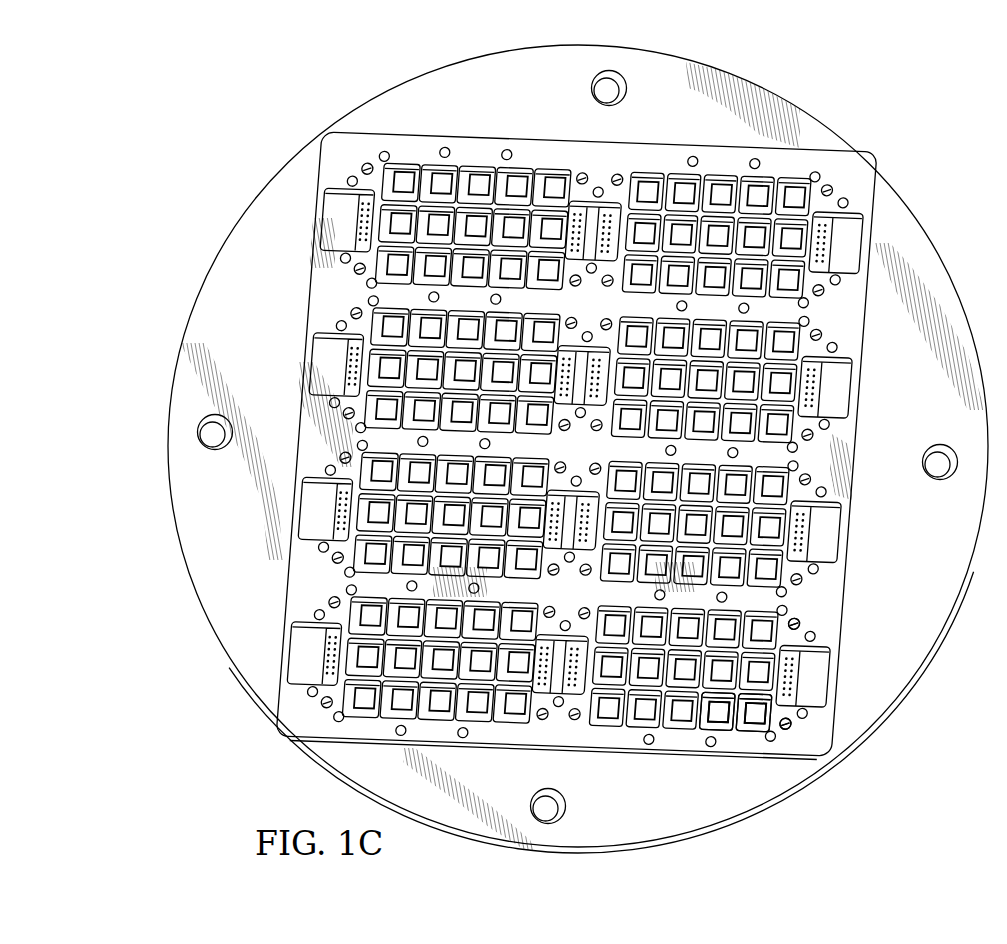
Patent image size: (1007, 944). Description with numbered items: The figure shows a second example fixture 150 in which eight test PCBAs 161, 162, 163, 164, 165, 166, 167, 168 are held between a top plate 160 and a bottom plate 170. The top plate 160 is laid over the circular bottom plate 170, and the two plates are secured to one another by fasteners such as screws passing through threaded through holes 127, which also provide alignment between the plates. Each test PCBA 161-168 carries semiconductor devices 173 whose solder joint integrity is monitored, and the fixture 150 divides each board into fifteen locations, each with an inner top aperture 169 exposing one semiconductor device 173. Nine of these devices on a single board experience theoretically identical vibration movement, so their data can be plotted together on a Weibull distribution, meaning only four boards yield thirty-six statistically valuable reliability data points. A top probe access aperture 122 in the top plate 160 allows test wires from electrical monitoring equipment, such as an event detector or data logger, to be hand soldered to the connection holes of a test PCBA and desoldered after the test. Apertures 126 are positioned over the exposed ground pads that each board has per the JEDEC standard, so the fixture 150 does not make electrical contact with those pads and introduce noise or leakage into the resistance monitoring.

The second example fixture 150 is at (263, 106).
The bottom plate 170 is at (190, 321).
The top plate 160 is at (309, 302).
The test PCBA 161 is at (555, 636).
The test PCBA 162 is at (566, 492).
The test PCBA 163 is at (578, 347).
The test PCBA 164 is at (590, 204).
The test PCBA 165 is at (843, 240).
The test PCBA 166 is at (845, 388).
The test PCBA 167 is at (825, 545).
The test PCBA 168 is at (798, 678).
The top probe access aperture 122 is at (306, 649).
The apertures 126 is at (792, 622).
The threaded through holes 127 is at (645, 743).
The semiconductor device 173 is at (713, 718).
The inner top apertures 169 is at (748, 729).